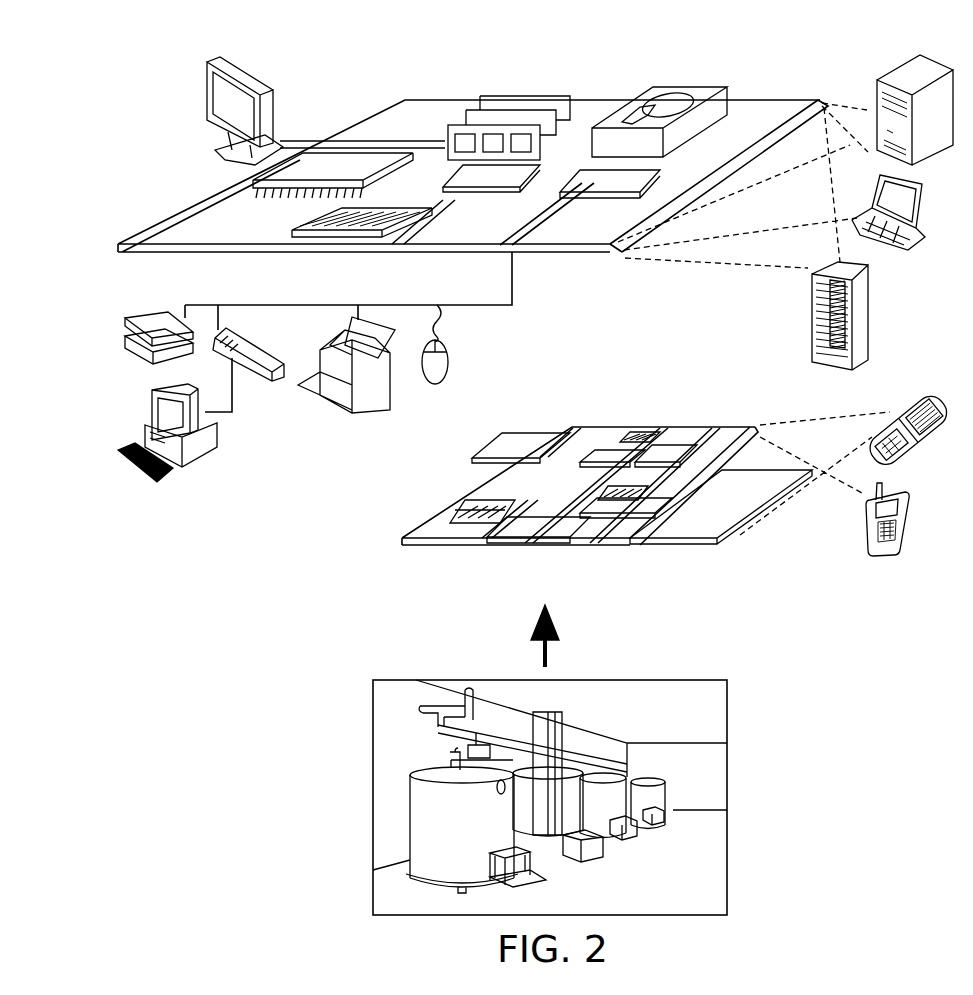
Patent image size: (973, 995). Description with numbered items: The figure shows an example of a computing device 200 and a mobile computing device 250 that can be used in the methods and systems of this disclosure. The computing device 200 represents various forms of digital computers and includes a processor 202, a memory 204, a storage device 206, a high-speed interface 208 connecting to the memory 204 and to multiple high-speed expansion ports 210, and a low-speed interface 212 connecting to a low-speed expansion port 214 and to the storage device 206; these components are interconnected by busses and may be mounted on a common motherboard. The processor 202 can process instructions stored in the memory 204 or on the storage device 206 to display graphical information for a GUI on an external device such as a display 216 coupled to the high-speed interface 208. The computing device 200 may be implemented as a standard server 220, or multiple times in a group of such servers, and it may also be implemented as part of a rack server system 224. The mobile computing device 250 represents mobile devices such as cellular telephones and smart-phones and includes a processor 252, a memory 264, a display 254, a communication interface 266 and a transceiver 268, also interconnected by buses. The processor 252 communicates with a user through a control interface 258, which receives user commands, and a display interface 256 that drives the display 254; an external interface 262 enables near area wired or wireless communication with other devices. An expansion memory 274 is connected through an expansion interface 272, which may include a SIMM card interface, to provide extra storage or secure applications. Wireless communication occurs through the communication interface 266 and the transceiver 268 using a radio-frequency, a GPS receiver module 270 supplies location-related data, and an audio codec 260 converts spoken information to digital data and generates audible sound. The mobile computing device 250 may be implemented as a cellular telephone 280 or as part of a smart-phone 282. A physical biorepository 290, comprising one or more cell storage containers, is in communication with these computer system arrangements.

The computing device 200 is at (345, 76).
The processor 202 is at (252, 183).
The memory 204 is at (495, 108).
The storage device 206 is at (655, 98).
The high-speed interface 208 is at (440, 162).
The high-speed expansion ports 210 is at (292, 226).
The low-speed interface 212 is at (592, 170).
The low-speed expansion port 214 is at (548, 252).
The display 216 is at (212, 75).
The standard server 220 is at (878, 105).
The rack server system 224 is at (814, 340).
The mobile computing device 250 is at (372, 553).
The processor 252 is at (516, 530).
The display 254 is at (700, 532).
The display interface 256 is at (580, 540).
The control interface 258 is at (600, 535).
The audio codec 260 is at (618, 515).
The external interface 262 is at (492, 545).
The memory 264 is at (465, 515).
The communication interface 266 is at (612, 445).
The transceiver 268 is at (668, 448).
The GPS receiver module 270 is at (645, 430).
The expansion interface 272 is at (556, 440).
The expansion memory 274 is at (510, 442).
The cellular telephone 280 is at (897, 403).
The smart-phone 282 is at (866, 520).
The physical biorepository 290 is at (550, 797).